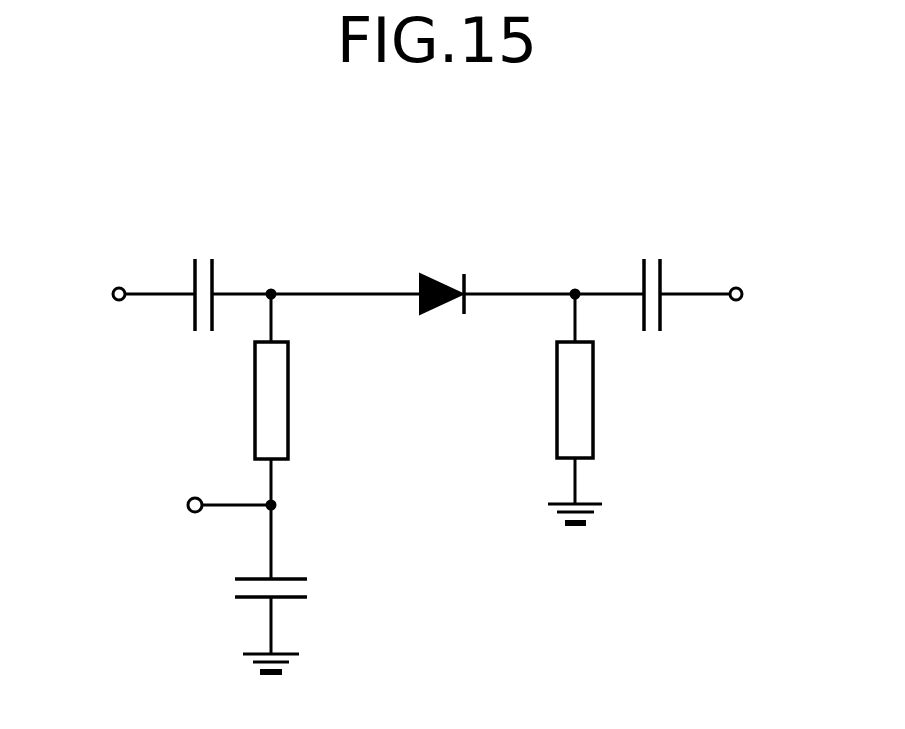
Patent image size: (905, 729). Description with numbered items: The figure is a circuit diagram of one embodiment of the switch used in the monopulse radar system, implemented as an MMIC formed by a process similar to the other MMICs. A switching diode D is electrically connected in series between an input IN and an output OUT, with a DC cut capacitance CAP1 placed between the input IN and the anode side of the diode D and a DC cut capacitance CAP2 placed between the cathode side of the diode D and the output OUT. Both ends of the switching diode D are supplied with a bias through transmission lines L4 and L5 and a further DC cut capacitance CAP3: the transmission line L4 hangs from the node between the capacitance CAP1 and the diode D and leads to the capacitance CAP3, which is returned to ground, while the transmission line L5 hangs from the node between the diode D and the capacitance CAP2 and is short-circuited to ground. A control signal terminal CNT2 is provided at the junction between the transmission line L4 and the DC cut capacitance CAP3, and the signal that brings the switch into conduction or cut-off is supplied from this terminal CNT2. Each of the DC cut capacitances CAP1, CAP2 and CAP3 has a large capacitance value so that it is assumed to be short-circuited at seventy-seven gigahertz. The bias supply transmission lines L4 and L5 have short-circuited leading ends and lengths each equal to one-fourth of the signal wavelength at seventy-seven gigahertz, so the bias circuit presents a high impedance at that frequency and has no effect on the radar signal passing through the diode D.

The input IN is at (101, 294).
The output OUT is at (767, 295).
The control signal terminal CNT2 is at (186, 520).
The DC cut capacitance CAP1 is at (204, 258).
The DC cut capacitance CAP2 is at (654, 258).
The DC cut capacitance CAP3 is at (235, 589).
The switching diode D is at (437, 275).
The transmission line L4 is at (254, 432).
The transmission line L5 is at (593, 436).